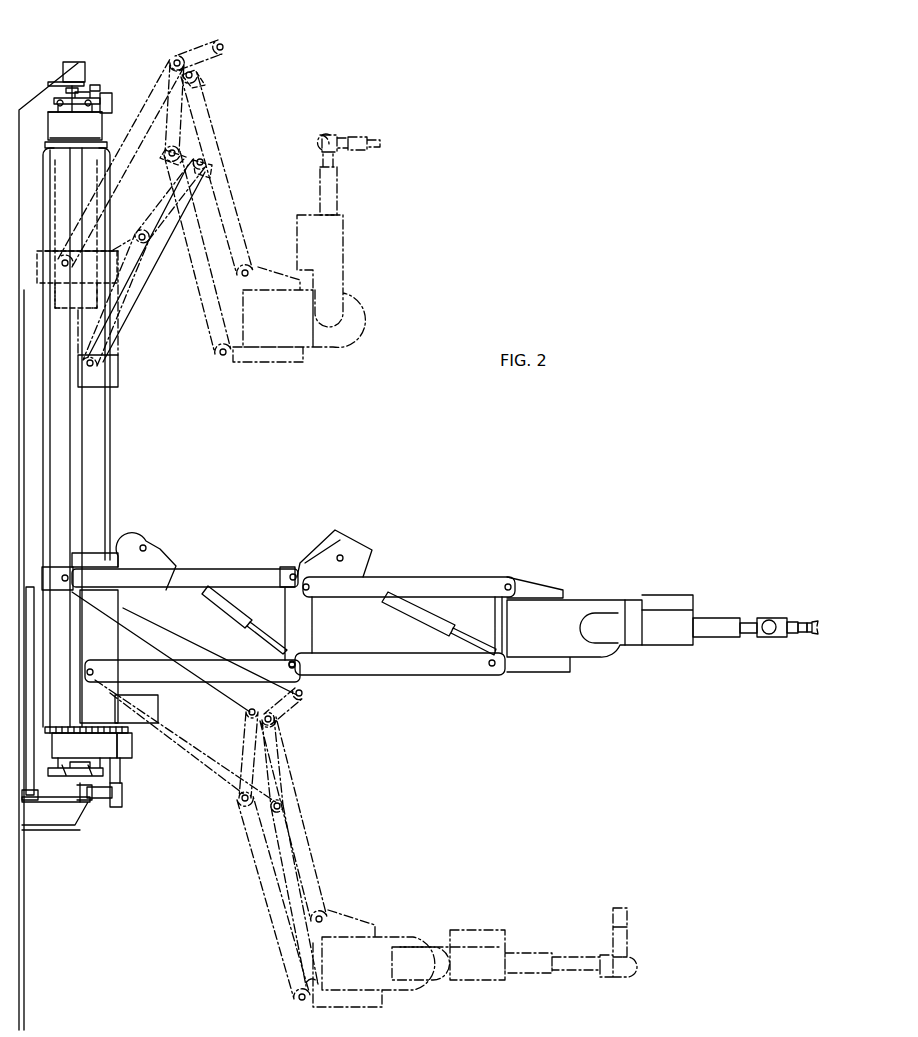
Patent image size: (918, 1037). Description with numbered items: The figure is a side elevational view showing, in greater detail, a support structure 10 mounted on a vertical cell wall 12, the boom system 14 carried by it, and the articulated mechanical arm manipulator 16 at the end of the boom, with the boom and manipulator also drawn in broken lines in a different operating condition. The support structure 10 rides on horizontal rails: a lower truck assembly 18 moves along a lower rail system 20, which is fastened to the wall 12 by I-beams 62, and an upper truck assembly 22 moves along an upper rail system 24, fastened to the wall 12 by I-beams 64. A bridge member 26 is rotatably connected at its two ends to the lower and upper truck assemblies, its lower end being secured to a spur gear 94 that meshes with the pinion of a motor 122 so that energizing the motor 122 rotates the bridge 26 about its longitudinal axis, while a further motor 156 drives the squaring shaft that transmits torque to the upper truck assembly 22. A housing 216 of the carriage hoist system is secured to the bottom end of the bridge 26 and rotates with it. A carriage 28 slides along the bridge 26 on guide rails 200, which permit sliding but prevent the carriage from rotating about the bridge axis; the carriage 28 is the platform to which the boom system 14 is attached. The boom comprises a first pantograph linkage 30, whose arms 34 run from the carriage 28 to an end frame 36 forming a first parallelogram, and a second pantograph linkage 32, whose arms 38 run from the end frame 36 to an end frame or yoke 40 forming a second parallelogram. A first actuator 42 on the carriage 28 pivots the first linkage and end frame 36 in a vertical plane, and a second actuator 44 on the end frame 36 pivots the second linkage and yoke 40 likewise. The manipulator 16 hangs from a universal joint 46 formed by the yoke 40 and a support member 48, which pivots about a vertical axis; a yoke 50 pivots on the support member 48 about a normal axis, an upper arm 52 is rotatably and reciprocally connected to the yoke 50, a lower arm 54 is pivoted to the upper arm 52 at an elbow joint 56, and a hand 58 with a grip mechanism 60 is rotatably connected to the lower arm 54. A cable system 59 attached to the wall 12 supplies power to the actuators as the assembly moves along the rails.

The support structure 10 is at (165, 397).
The vertical cell wall 12 is at (68, 60).
The boom system 14 is at (398, 481).
The articulated mechanical arm manipulator 16 is at (750, 613).
The lower truck assembly 18 is at (127, 769).
The lower rail system 20 is at (94, 804).
The upper truck assembly 22 is at (113, 93).
The upper rail system 24 is at (99, 71).
The bridge member 26 is at (93, 432).
The carriage 28 is at (88, 557).
The first pantograph linkage 30 is at (171, 585).
The second pantograph linkage 32 is at (413, 591).
The arms 34 is at (235, 575).
The end frame 36 is at (297, 574).
The arms 38 is at (408, 586).
The end frame or yoke 40 is at (531, 583).
The first actuator 42 is at (153, 534).
The second actuator 44 is at (339, 543).
The universal joint 46 is at (600, 611).
The support member 48 is at (588, 611).
The yoke 50 is at (634, 644).
The upper arm 52 is at (713, 629).
The lower arm 54 is at (778, 638).
The elbow joint 56 is at (767, 634).
The hand 58 is at (802, 634).
The cable system 59 is at (30, 802).
The grip mechanism 60 is at (813, 635).
The I-beams 62 is at (46, 822).
The I-beams 64 is at (82, 63).
The spur gear 94 is at (128, 731).
The motor 122 is at (125, 750).
The motor 156 is at (122, 798).
The guide rails 200 is at (77, 472).
The housing 216 is at (158, 698).